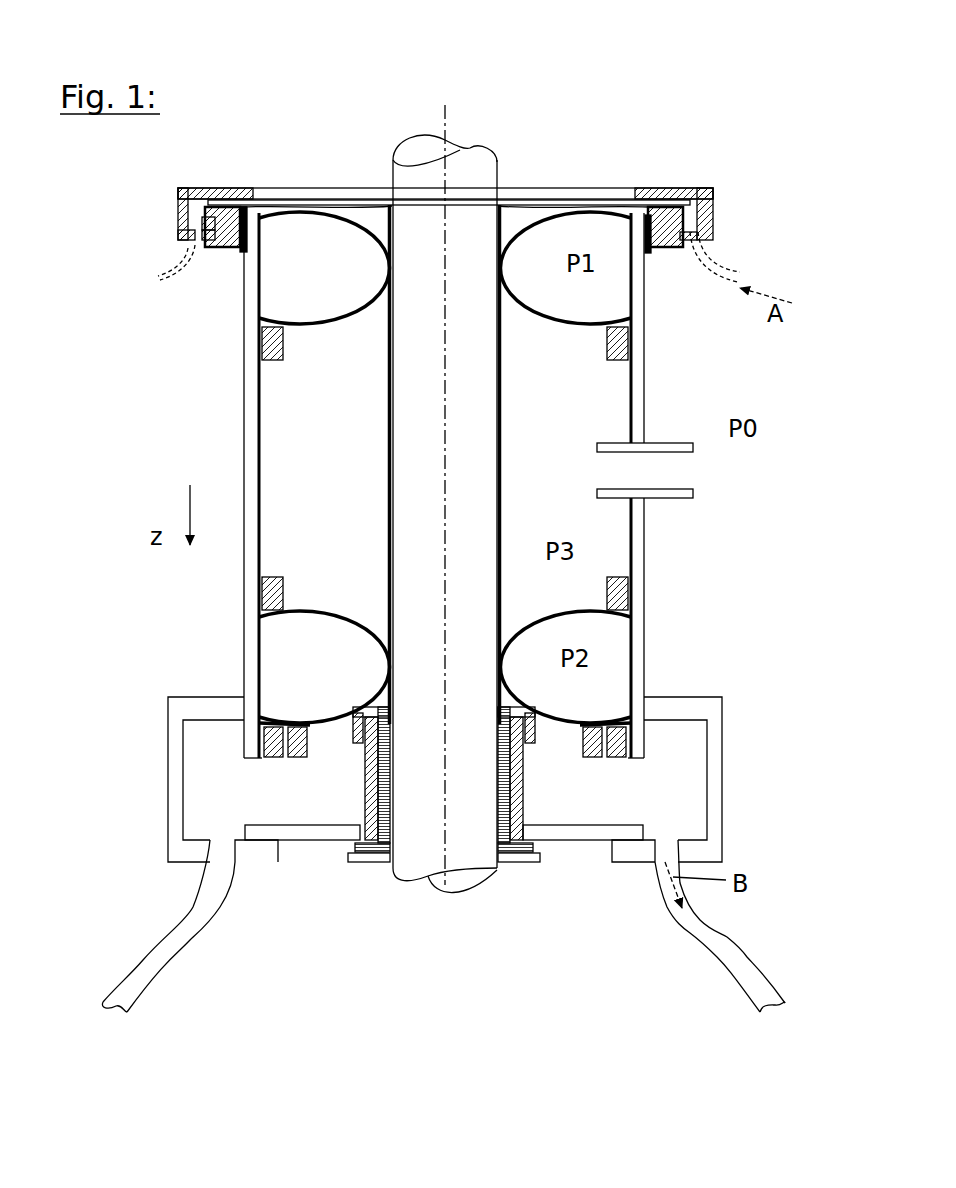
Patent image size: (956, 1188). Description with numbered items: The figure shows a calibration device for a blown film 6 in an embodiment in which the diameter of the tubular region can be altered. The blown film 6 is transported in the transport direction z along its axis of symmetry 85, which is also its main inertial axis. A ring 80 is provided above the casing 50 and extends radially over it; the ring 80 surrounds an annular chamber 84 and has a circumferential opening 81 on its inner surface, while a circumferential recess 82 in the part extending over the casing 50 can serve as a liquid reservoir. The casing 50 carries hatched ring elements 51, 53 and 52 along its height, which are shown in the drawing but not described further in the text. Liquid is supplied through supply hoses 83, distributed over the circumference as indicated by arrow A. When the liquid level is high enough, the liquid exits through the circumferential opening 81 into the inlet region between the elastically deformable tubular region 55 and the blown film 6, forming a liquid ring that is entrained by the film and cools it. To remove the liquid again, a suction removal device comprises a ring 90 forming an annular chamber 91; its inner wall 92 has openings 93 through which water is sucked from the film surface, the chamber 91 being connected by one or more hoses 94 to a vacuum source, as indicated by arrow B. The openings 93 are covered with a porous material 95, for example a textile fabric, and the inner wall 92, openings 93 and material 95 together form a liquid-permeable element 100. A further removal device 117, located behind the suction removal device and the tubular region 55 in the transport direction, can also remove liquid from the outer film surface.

The blown film 6 is at (499, 188).
The casing 50 is at (646, 410).
The upper ring 51 is at (588, 323).
The lower ring 52 is at (590, 613).
The middle ring 53 is at (632, 592).
The tubular region 55 is at (504, 532).
The ring 80 is at (695, 228).
The circumferential opening 81 is at (665, 202).
The circumferential recess 82 is at (711, 201).
The supply hoses 83 is at (702, 268).
The annular chamber 84 is at (690, 210).
The axis of symmetry 85 is at (446, 128).
The ring 90 is at (483, 779).
The annular chamber 91 is at (672, 800).
The inner wall 92 is at (546, 814).
The openings 93 is at (561, 814).
The hoses 94 is at (731, 943).
The porous material 95 is at (519, 887).
The liquid-permeable element 100 is at (565, 858).
The removal device 117 is at (370, 862).